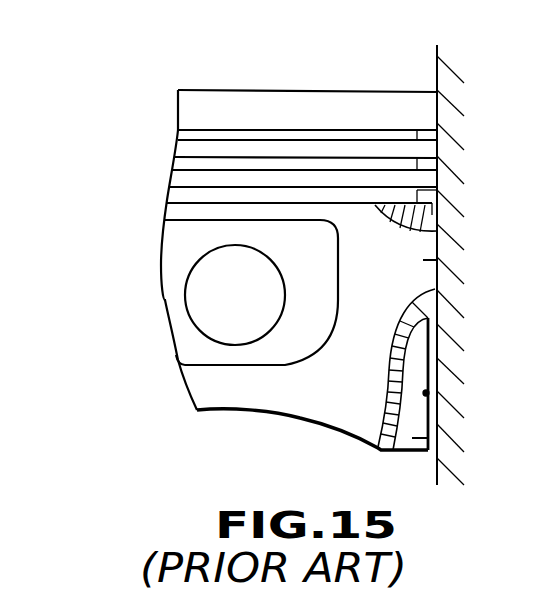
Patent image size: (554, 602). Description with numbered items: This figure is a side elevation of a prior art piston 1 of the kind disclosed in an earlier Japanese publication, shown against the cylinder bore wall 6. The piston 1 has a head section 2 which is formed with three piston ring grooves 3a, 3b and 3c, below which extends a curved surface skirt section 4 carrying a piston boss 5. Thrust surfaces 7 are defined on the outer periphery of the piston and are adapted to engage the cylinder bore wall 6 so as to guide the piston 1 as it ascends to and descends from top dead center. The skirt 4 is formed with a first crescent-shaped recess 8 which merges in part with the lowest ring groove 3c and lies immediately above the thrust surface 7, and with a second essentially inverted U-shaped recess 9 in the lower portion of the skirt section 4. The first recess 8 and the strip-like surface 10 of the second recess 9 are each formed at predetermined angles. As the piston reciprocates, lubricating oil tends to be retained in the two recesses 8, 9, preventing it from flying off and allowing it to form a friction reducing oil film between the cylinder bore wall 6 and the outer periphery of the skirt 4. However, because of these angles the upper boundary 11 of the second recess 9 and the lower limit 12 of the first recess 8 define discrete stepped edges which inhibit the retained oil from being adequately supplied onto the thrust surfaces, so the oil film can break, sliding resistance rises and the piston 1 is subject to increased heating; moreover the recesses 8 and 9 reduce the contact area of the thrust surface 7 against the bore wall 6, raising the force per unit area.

The piston 1 is at (142, 265).
The head section 2 is at (218, 90).
The piston ring groove 3a is at (180, 132).
The piston ring groove 3b is at (175, 162).
The piston ring groove 3c is at (167, 192).
The skirt section 4 is at (283, 392).
The piston boss 5 is at (178, 329).
The cylinder bore wall 6 is at (430, 395).
The thrust surface 7 is at (440, 262).
The first crescent-shaped recess 8 is at (440, 215).
The second inverted U-shaped recess 9 is at (437, 447).
The strip-like surface 10 is at (440, 337).
The upper boundary 11 is at (440, 292).
The lower limit 12 is at (437, 227).